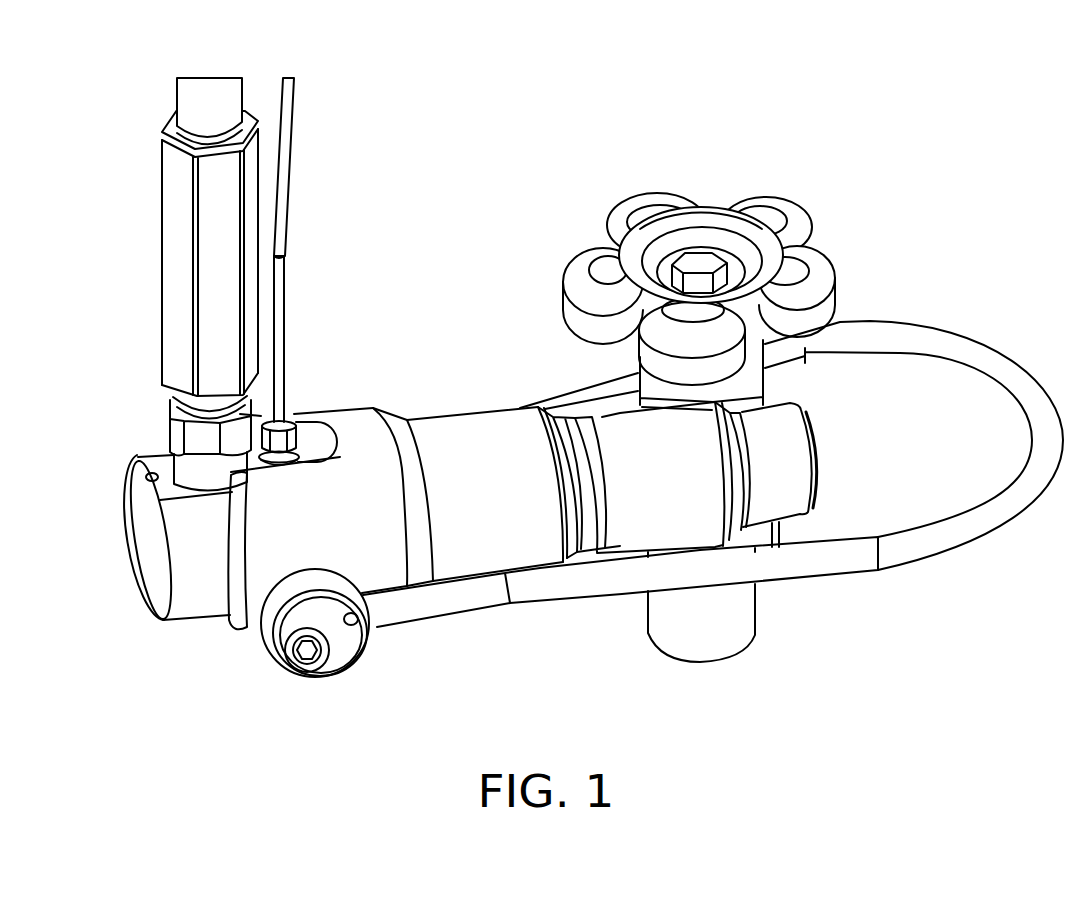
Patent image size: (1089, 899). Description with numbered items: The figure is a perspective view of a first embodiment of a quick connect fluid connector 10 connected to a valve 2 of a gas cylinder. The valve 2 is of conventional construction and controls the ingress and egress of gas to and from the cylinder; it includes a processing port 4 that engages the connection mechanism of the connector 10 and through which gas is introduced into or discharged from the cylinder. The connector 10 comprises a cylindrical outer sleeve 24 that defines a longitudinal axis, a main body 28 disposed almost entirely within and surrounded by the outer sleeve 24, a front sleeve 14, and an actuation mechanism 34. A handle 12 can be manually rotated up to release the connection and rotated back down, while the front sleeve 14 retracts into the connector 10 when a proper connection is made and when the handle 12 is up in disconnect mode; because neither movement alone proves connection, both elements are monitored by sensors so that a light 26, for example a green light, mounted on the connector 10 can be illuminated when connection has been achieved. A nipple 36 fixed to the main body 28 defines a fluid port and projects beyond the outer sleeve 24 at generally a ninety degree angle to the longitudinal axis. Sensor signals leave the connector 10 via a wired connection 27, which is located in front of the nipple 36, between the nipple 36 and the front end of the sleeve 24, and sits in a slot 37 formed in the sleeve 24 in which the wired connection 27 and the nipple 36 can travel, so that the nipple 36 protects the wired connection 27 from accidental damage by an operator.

The valve 2 is at (825, 251).
The processing port 4 is at (658, 492).
The quick connect fluid connector 10 is at (569, 422).
The handle 12 is at (913, 545).
The front sleeve 14 is at (590, 547).
The outer sleeve 24 is at (353, 438).
The light 26 is at (133, 468).
The wired connection 27 is at (289, 419).
The main body 28 is at (208, 554).
The actuation mechanism 34 is at (326, 706).
The nipple 36 is at (193, 439).
The slot 37 is at (306, 444).